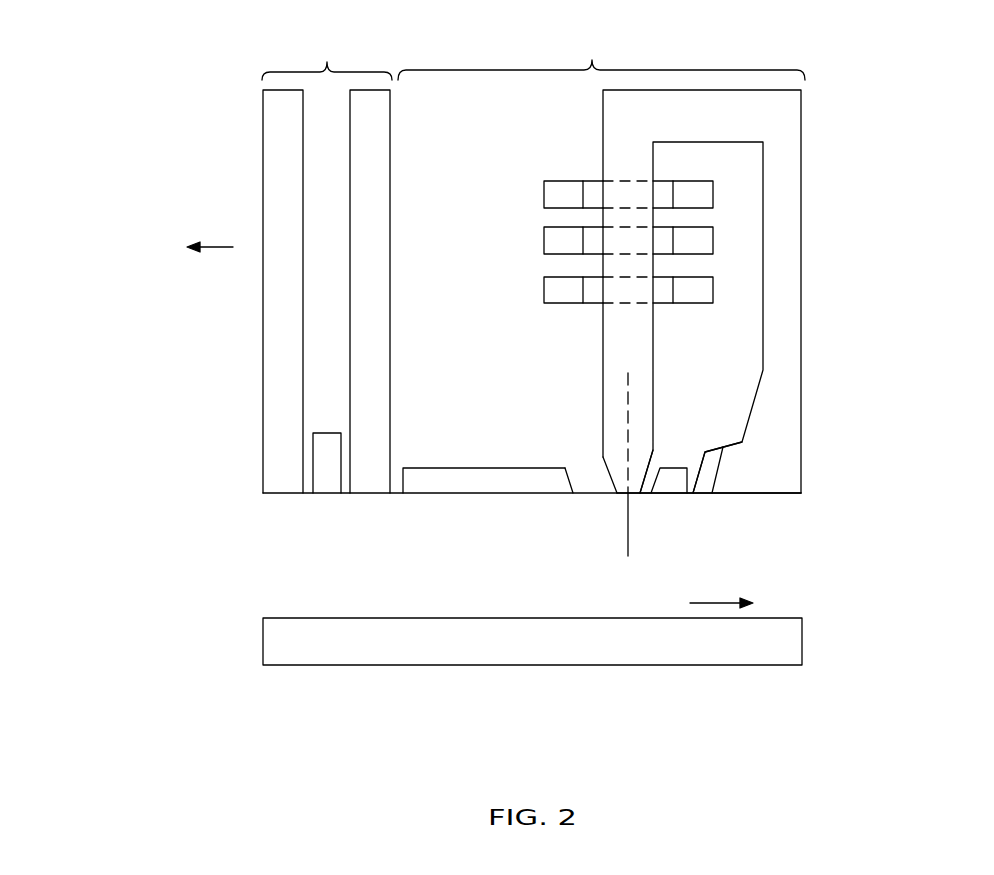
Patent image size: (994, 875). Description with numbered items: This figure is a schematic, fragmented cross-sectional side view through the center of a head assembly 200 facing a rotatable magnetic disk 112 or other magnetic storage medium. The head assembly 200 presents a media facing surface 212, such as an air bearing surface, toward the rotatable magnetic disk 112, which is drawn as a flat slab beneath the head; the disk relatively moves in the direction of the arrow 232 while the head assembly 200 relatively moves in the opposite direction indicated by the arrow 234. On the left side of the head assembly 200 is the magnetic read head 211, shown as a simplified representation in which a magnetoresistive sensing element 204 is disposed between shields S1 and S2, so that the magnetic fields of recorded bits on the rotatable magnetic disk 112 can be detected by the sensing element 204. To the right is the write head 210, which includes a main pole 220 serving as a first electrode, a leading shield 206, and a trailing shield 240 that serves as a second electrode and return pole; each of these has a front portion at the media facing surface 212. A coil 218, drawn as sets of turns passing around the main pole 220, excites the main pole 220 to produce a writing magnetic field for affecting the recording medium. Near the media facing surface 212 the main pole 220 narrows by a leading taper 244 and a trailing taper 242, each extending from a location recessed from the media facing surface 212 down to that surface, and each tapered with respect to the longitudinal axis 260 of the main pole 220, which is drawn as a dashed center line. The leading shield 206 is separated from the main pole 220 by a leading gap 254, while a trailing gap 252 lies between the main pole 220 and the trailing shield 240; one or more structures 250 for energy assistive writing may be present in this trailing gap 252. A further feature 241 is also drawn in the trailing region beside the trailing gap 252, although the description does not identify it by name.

The head assembly 200 is at (155, 62).
The magnetic read head 211 is at (327, 56).
The write head 210 is at (601, 55).
The shield S1 is at (275, 482).
The shield S2 is at (368, 482).
The sensing element 204 is at (325, 487).
The leading shield 206 is at (438, 495).
The leading gap 254 is at (590, 494).
The trailing shield 240 is at (788, 423).
The leading taper 244 is at (603, 458).
The media facing surface 212 is at (775, 482).
The main pole 220 is at (637, 333).
The trailing taper 242 is at (653, 457).
The angled wall 241 is at (710, 480).
The trailing gap 252 is at (707, 482).
The structure for energy assistive writing 250 is at (667, 494).
The longitudinal axis 260 is at (627, 551).
The coil 218 is at (560, 304).
The arrow 234 is at (222, 247).
The arrow 232 is at (715, 600).
The rotatable magnetic disk 112 is at (803, 640).